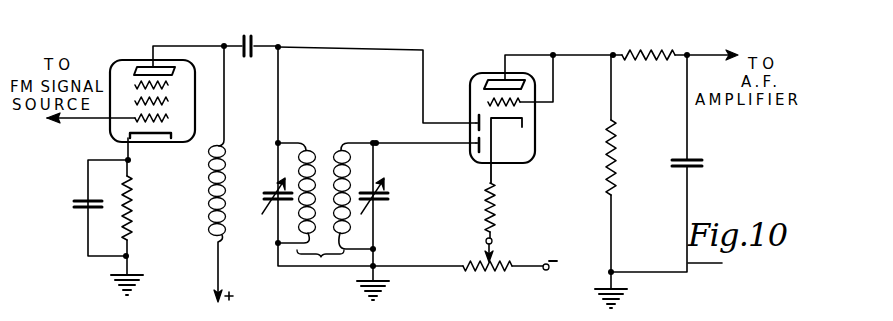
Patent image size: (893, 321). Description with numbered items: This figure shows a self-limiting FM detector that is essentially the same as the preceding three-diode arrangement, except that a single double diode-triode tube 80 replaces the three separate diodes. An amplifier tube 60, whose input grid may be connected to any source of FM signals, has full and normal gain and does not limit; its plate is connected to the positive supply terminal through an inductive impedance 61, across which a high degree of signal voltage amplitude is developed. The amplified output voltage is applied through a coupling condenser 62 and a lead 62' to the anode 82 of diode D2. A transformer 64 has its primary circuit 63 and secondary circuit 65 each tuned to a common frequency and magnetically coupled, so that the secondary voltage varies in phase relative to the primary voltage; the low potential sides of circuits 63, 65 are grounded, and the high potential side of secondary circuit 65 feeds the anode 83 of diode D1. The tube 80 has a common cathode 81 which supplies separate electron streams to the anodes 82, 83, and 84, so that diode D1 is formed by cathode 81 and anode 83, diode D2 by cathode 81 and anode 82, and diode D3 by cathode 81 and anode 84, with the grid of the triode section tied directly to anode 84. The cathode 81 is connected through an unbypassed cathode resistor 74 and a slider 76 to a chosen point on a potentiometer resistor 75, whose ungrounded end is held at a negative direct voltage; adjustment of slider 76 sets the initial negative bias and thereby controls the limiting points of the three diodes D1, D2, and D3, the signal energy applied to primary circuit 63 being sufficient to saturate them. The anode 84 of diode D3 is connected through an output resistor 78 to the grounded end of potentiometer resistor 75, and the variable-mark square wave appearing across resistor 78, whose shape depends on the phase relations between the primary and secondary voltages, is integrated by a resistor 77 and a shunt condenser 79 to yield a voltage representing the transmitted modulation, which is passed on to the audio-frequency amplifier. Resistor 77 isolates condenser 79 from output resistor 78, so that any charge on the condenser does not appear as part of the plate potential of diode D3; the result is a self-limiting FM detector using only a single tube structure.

The amplifier tube 60 is at (139, 57).
The inductive impedance 61 is at (209, 206).
The coupling condenser 62 is at (240, 64).
The lead 62' is at (377, 85).
The primary circuit 63 is at (290, 218).
The transformer 64 is at (324, 155).
The secondary circuit 65 is at (350, 223).
The cathode resistor 74 is at (501, 200).
The potentiometer resistor 75 is at (507, 258).
The slider 76 is at (485, 244).
The resistor 77 is at (663, 67).
The output resistor 78 is at (617, 159).
The shunt condenser 79 is at (718, 153).
The double diode-triode tube 80 is at (496, 70).
The common cathode 81 is at (523, 124).
The anode 82 is at (477, 118).
The anode 83 is at (477, 151).
The anode 84 is at (530, 86).
The diode D1 is at (481, 154).
The diode D2 is at (480, 113).
The diode D3 is at (550, 99).